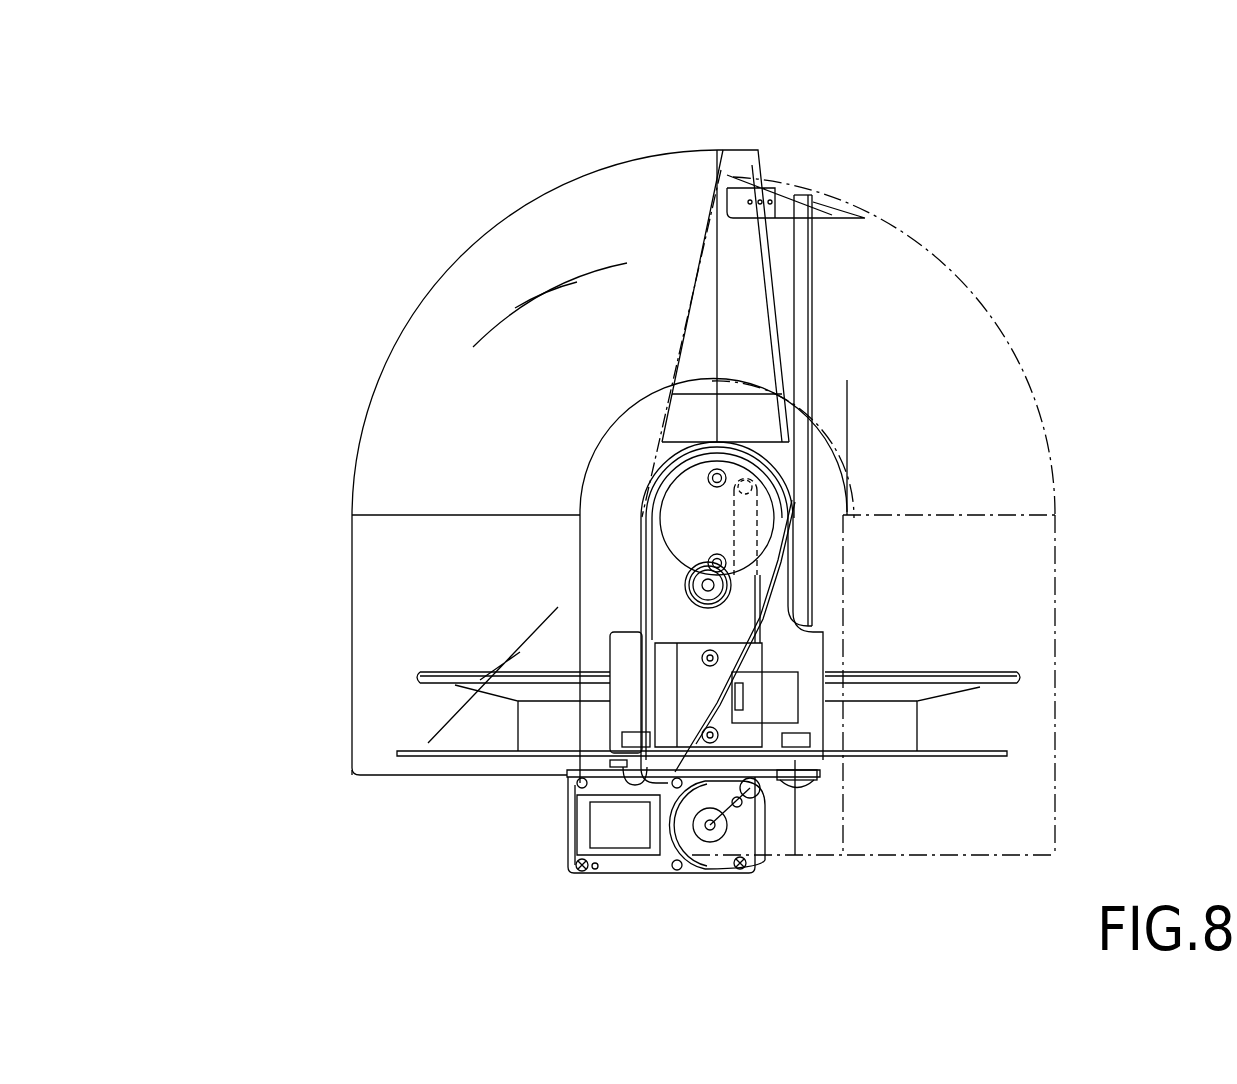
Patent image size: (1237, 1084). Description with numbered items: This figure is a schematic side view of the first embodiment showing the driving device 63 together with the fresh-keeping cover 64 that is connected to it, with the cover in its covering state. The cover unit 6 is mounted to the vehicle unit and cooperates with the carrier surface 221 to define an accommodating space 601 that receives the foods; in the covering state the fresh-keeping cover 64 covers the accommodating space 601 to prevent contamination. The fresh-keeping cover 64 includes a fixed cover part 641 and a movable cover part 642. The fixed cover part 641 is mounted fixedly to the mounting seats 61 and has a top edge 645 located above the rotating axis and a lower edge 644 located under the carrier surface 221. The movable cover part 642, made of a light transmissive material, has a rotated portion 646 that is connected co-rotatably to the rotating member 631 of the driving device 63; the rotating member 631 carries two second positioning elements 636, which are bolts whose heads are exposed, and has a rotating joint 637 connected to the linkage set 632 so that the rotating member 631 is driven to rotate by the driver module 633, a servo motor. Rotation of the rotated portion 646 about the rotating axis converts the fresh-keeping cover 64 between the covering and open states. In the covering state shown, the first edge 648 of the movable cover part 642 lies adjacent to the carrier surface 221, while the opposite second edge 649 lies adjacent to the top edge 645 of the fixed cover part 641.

The cover unit 6 is at (647, 138).
The fresh-keeping cover 64 is at (556, 180).
The movable cover part 642 is at (488, 243).
The fixed cover part 641 is at (1043, 410).
The lower edge 644 is at (948, 858).
The rotated portion 646 is at (706, 477).
The top edge 645 is at (718, 215).
The second edge 649 is at (765, 165).
The second positioning elements 636 is at (706, 479).
The rotating joint 637 is at (752, 486).
The rotating member 631 is at (660, 520).
The linkage set 632 is at (758, 621).
The mounting seats 61 is at (823, 633).
The carrier surface 221 is at (987, 752).
The driver module 633 is at (632, 872).
The driving device 63 is at (737, 817).
The first edge 648 is at (403, 778).
The accommodating space 601 is at (872, 460).